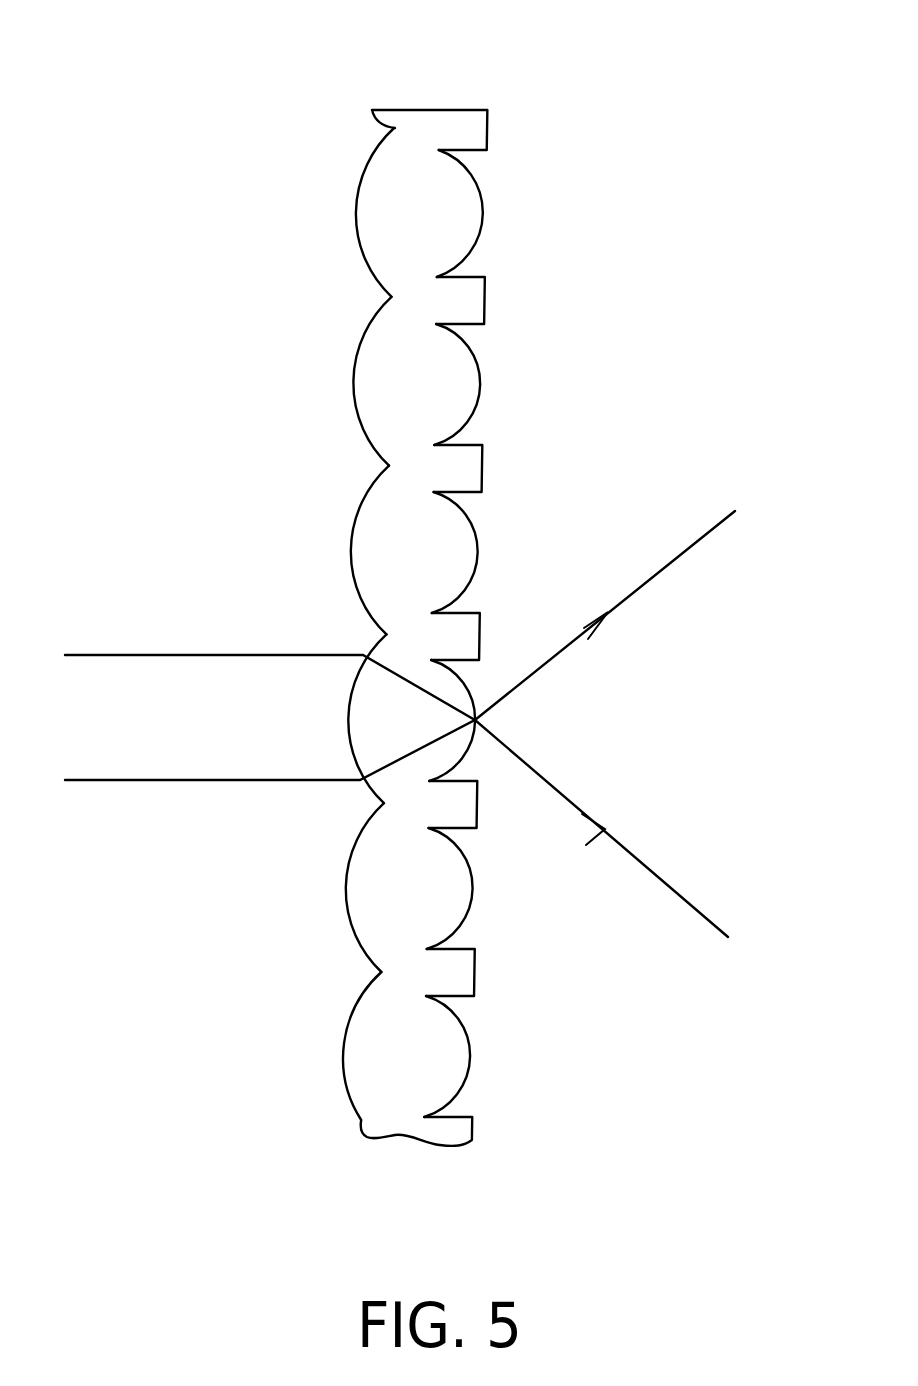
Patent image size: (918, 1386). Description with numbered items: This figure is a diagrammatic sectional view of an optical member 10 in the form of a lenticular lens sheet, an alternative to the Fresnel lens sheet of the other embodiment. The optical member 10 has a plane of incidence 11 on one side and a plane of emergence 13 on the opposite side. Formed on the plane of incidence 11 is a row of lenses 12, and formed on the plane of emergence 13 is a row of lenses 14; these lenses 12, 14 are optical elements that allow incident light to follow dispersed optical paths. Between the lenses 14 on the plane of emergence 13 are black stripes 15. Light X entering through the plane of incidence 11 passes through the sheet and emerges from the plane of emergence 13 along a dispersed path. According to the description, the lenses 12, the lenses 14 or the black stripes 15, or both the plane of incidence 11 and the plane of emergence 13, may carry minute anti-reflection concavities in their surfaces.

The optical member 10 is at (553, 112).
The plane of incidence 11 is at (377, 157).
The lenses 12 is at (358, 335).
The plane of emergence 13 is at (473, 170).
The lenses 14 is at (462, 227).
The black stripes 15 is at (485, 297).
The optical path of incident light X is at (190, 652).